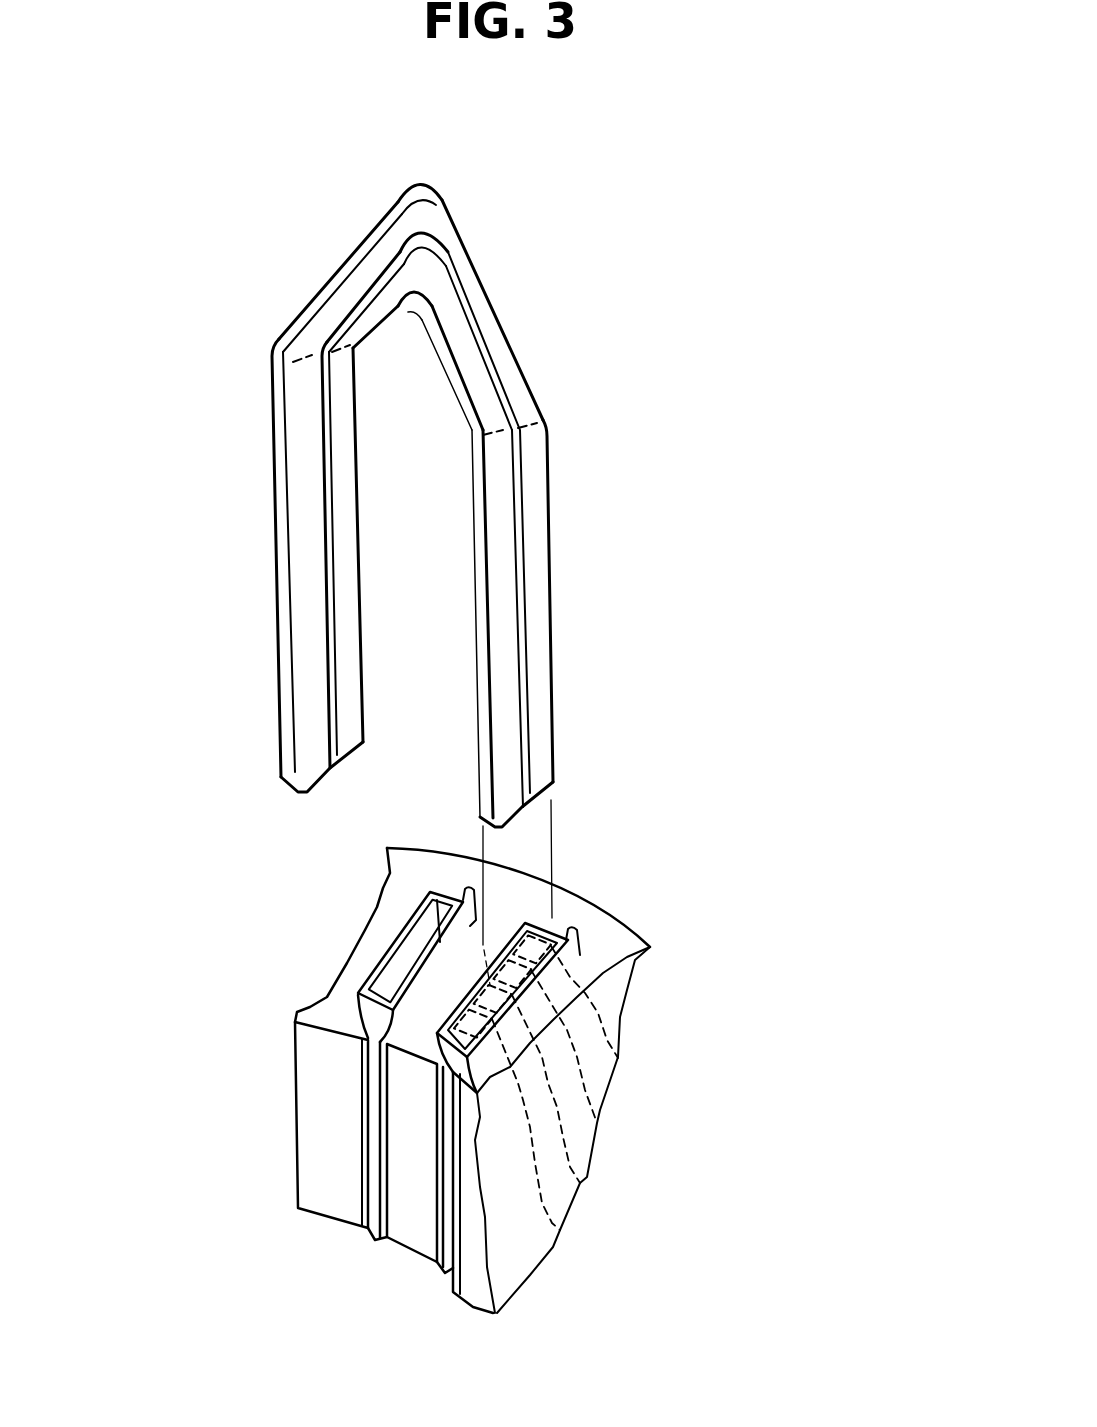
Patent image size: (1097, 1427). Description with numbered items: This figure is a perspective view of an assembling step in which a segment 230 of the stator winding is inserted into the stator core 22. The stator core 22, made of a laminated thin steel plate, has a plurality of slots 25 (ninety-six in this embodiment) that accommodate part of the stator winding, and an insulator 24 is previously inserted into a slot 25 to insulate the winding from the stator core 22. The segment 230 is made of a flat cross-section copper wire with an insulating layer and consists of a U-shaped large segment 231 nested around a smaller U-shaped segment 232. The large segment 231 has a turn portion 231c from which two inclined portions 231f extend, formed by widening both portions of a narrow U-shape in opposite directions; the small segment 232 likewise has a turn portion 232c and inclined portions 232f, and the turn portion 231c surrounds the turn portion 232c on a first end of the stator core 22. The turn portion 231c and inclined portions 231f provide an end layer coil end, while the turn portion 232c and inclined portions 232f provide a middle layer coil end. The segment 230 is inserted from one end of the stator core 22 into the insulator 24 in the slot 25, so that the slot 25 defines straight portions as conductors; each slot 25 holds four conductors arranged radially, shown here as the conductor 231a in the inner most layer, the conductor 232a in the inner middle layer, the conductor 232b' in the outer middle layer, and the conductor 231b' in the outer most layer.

The stator core 22 is at (613, 943).
The insulator 24 is at (563, 927).
The slot 25 is at (378, 1125).
The segment 230 is at (580, 316).
The large segment 231 is at (480, 297).
The conductor 231a is at (557, 1232).
The conductor 231b' is at (666, 1016).
The turn portion 231c is at (427, 193).
The inclined portion 231f is at (357, 277).
The small segment 232 is at (493, 407).
The conductor 232a is at (590, 1186).
The conductor 232b' is at (640, 1061).
The turn portion 232c is at (422, 257).
The inclined portion 232f is at (357, 323).